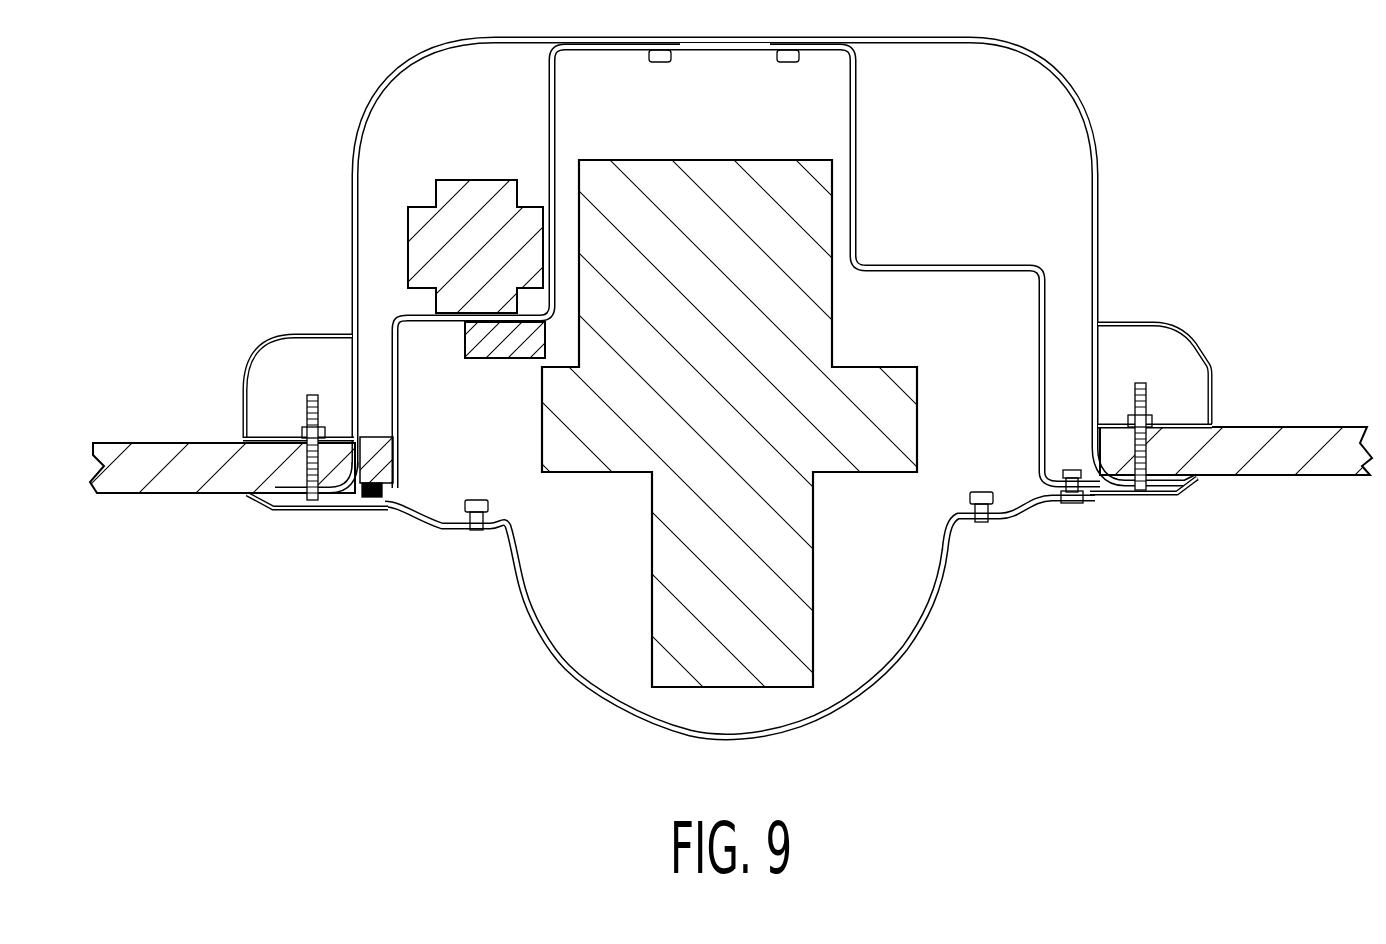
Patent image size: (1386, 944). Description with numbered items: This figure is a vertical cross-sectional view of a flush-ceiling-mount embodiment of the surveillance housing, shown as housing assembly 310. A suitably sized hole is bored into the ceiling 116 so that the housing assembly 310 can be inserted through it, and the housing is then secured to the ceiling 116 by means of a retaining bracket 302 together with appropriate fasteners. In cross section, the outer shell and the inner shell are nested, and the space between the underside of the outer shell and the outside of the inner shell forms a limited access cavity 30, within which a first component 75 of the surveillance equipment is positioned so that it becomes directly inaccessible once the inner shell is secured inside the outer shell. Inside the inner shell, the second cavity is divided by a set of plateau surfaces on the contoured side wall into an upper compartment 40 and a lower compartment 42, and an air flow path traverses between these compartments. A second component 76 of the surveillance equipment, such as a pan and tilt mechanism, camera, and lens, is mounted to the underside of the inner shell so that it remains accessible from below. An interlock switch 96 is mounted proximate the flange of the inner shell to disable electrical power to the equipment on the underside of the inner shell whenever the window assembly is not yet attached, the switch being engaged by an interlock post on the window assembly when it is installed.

The limited access cavity 30 is at (487, 137).
The upper compartment 40 is at (714, 137).
The lower compartment 42 is at (487, 447).
The component 75 is at (415, 248).
The component 76 is at (790, 663).
The interlock switch 96 is at (388, 500).
The ceiling 116 is at (1257, 433).
The retaining bracket 302 is at (1172, 358).
The housing assembly 310 is at (1142, 156).